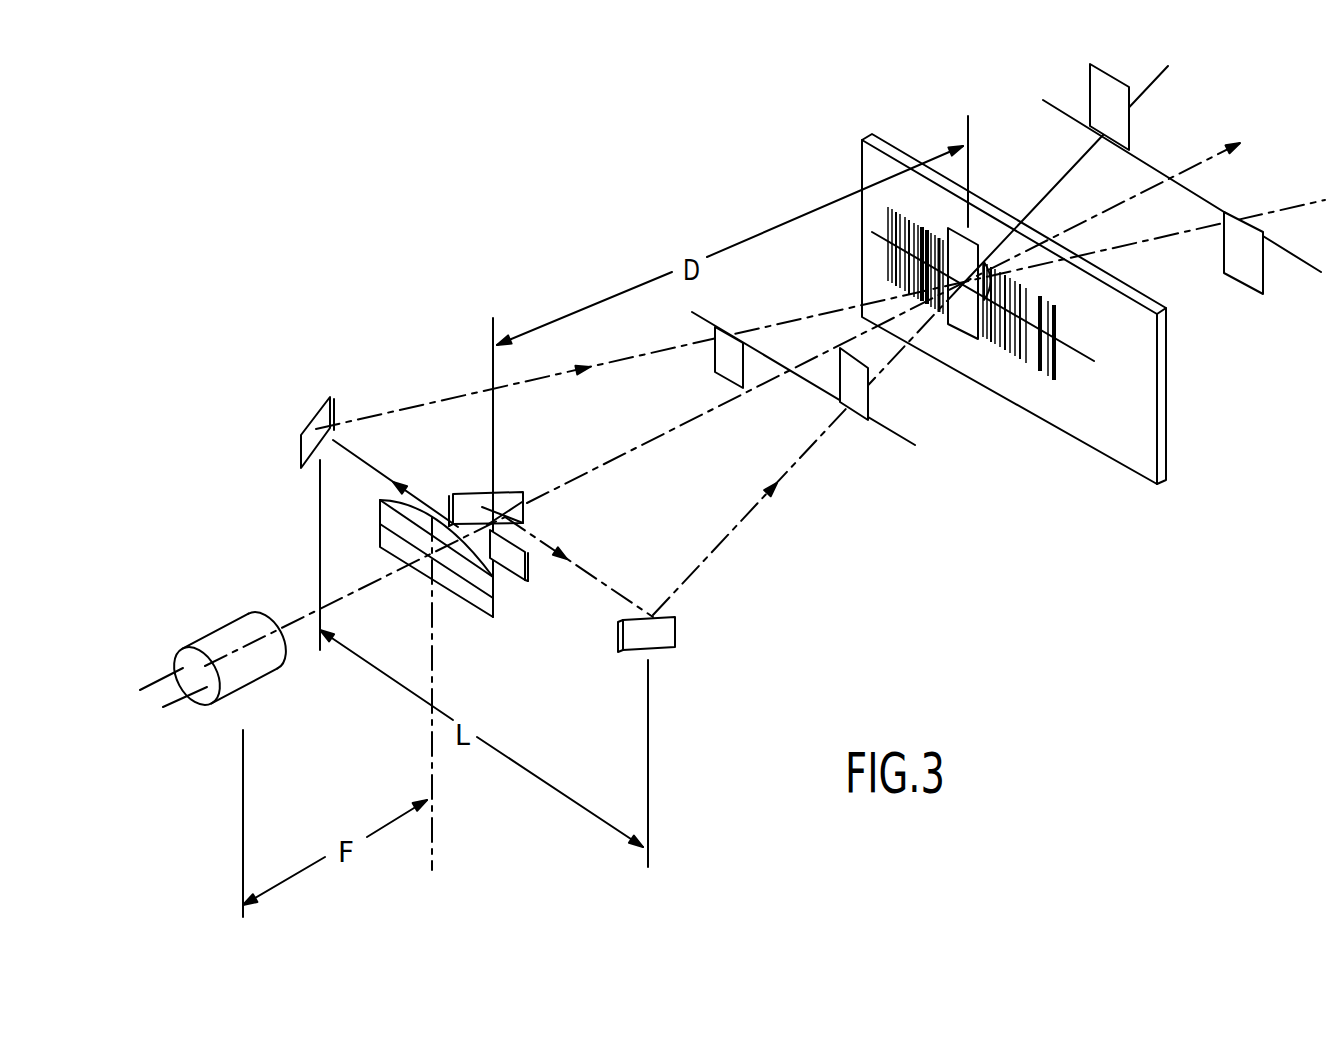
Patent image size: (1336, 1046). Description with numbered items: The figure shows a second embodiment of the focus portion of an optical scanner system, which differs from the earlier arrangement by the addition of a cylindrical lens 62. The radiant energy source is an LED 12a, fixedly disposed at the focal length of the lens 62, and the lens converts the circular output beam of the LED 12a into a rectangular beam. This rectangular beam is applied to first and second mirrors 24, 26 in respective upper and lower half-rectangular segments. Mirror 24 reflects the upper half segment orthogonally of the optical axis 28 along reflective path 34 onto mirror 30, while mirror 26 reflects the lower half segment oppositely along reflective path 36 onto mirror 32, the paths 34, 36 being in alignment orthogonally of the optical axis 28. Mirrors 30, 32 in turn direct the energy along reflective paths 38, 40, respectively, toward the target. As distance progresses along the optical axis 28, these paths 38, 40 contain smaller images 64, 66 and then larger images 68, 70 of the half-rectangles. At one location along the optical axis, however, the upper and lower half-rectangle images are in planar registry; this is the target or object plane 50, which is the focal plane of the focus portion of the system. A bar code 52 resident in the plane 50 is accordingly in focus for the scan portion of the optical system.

The LED 12a is at (238, 687).
The first mirror 24 is at (507, 495).
The second mirror 26 is at (532, 577).
The optical axis 28 is at (663, 438).
The mirror 30 is at (678, 633).
The mirror 32 is at (320, 410).
The reflective path 34 is at (598, 578).
The reflective path 36 is at (413, 492).
The reflective path 38 is at (800, 468).
The reflective path 40 is at (573, 367).
The target or object plane 50 is at (1142, 417).
The bar code 52 is at (1013, 352).
The cylindrical lens 62 is at (470, 590).
The smaller image 64 is at (872, 402).
The smaller image 66 is at (732, 375).
The larger image 68 is at (1131, 118).
The larger image 70 is at (1241, 262).